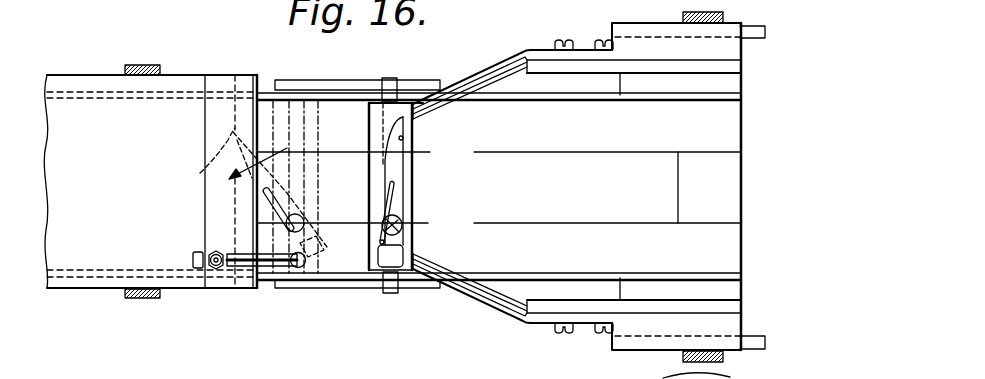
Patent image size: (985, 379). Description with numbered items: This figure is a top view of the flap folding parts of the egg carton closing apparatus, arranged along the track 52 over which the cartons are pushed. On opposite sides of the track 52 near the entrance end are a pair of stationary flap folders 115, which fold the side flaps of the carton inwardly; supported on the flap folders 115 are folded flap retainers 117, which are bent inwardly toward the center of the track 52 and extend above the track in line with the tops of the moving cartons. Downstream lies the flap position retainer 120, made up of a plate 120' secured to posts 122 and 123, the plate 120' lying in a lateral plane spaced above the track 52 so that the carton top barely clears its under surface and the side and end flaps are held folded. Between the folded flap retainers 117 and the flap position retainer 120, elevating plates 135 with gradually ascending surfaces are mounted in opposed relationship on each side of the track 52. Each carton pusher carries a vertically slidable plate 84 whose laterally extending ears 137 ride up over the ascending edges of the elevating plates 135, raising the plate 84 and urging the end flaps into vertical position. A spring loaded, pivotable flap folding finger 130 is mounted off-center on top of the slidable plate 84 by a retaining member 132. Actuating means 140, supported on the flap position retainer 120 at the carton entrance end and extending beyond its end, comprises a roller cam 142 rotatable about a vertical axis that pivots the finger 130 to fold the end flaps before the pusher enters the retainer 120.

The track 52 is at (541, 275).
The vertically slidable plate 84 is at (415, 197).
The flap folder 115 is at (575, 67).
The folded flap retainer 117 is at (490, 72).
The flap position retainer 120 is at (150, 163).
The plate 120' is at (152, 292).
The post 122 is at (152, 65).
The post 123 is at (148, 298).
The flap folding finger 130 is at (203, 170).
The retaining member 132 is at (401, 231).
The elevating plate 135 is at (335, 84).
The ear 137 is at (392, 80).
The actuating means 140 is at (266, 270).
The roller cam 142 is at (303, 268).